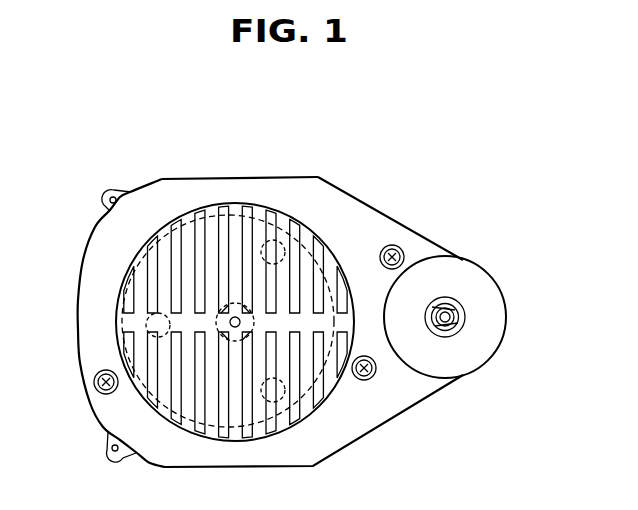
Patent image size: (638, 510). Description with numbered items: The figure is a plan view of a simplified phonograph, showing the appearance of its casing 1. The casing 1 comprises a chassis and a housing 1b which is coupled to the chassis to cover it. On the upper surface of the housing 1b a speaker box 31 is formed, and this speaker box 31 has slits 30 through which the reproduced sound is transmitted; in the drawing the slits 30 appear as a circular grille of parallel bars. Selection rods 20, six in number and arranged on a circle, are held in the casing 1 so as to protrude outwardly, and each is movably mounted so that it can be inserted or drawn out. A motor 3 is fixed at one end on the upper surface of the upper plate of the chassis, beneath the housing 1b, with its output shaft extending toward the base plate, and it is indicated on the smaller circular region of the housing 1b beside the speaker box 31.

The casing 1 is at (338, 203).
The housing 1b is at (432, 238).
The selection rods 20 is at (235, 276).
The slits 30 is at (223, 213).
The speaker box 31 is at (340, 248).
The motor 3 is at (458, 317).